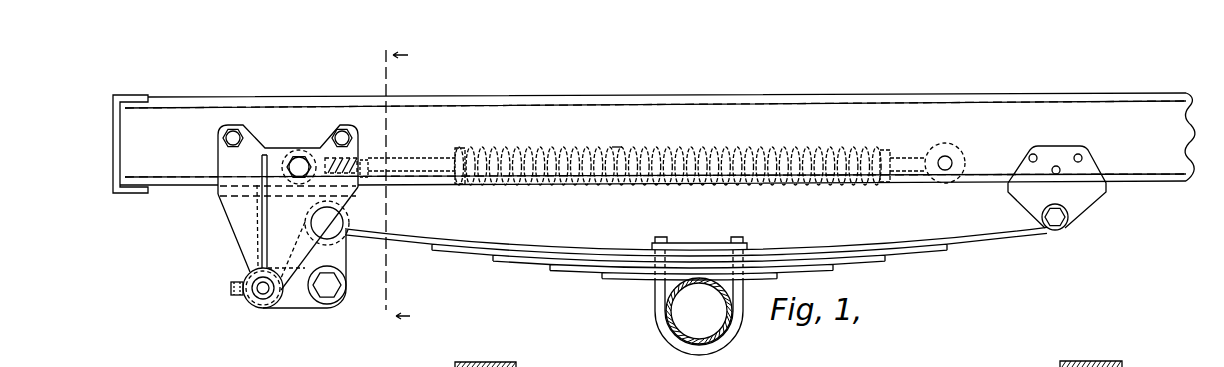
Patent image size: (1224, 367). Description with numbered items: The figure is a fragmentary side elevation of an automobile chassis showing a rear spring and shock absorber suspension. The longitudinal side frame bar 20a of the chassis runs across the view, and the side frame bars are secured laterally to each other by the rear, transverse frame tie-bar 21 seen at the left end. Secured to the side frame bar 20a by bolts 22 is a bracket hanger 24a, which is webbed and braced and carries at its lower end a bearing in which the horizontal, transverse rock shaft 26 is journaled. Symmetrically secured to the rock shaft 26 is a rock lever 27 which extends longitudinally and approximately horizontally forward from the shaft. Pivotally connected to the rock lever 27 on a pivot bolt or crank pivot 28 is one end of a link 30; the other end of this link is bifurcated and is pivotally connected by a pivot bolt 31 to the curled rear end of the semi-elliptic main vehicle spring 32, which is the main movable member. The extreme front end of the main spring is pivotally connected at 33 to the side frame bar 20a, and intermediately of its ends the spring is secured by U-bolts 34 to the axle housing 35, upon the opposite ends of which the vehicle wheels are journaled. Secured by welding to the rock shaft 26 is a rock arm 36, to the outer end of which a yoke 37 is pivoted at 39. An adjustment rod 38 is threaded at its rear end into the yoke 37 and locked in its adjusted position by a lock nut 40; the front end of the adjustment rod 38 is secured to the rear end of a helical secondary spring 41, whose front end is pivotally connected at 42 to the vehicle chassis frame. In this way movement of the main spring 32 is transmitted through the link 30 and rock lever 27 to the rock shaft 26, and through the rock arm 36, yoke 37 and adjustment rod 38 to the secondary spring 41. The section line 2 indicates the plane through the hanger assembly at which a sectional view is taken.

The section line 2- 2 is at (394, 187).
The longitudinal side frame bar 20a is at (1000, 97).
The rear transverse frame tie-bar 21 is at (113, 145).
The bolts 22 is at (333, 128).
The bracket hanger 24a is at (342, 130).
The rock shaft 26 is at (259, 302).
The rock lever 27 is at (298, 306).
The pivot bolt 28 is at (328, 300).
The link 30 is at (334, 252).
The pivot bolt 31 is at (340, 222).
The main vehicle spring 32 is at (528, 262).
The front pivotal connection 33 is at (1042, 217).
The U-bolts 34 is at (733, 337).
The axle housing 35 is at (673, 338).
The rock arm 36 is at (252, 252).
The yoke 37 is at (328, 157).
The adjustment rod 38 is at (435, 160).
The pivot 39 is at (296, 156).
The lock nut 40 is at (363, 159).
The helical secondary spring 41 is at (617, 150).
The front pivotal connection of secondary spring 42 is at (944, 184).